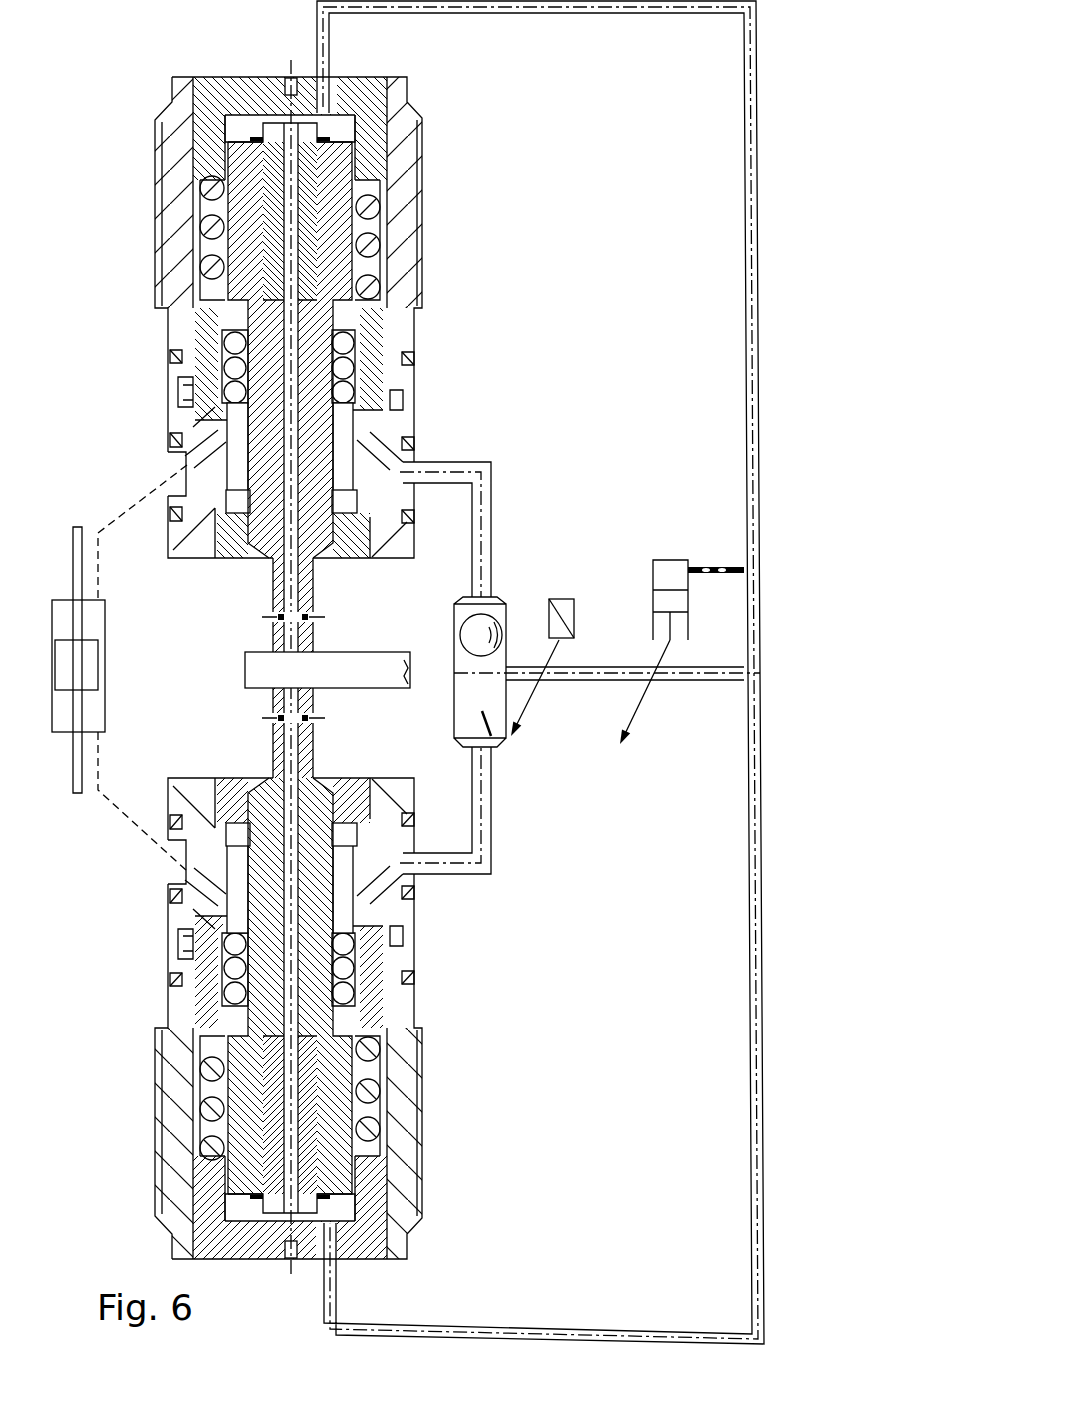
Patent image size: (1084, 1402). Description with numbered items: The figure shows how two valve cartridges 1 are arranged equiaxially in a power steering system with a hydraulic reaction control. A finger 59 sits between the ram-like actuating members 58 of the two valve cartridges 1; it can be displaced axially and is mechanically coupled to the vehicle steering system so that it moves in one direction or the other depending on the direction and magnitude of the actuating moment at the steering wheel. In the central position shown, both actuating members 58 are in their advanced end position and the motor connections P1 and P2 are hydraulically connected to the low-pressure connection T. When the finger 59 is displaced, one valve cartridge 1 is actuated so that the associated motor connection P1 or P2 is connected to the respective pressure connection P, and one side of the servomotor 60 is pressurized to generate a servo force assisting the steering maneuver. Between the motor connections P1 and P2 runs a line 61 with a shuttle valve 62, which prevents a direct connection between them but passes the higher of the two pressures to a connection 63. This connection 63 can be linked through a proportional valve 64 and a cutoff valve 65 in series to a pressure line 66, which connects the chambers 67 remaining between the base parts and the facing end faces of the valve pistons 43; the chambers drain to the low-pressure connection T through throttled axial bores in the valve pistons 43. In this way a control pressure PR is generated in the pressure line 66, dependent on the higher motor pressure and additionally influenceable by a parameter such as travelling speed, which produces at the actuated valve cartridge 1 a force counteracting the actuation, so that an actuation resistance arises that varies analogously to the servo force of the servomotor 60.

The valve cartridge 1 is at (425, 197).
The valve piston 43 is at (328, 330).
The actuating member 58 is at (313, 637).
The finger 59 is at (388, 673).
The servomotor 60 is at (111, 670).
The line 61 is at (474, 563).
The shuttle valve 62 is at (490, 749).
The connection 63 is at (523, 662).
The proportional valve 64 is at (557, 610).
The cutoff valve 65 is at (683, 607).
The pressure line 66 is at (752, 260).
The chamber 67 is at (238, 130).
The pressure connection P is at (183, 393).
The motor connection P1 is at (143, 474).
The motor connection P2 is at (126, 857).
The low-pressure connection T is at (219, 668).
The control pressure PR is at (465, 670).